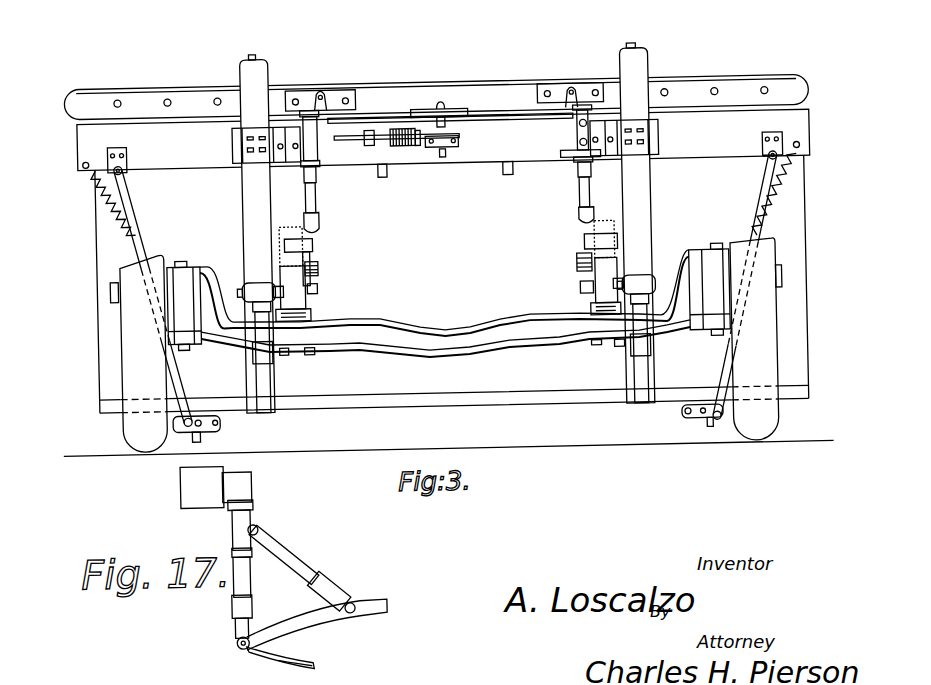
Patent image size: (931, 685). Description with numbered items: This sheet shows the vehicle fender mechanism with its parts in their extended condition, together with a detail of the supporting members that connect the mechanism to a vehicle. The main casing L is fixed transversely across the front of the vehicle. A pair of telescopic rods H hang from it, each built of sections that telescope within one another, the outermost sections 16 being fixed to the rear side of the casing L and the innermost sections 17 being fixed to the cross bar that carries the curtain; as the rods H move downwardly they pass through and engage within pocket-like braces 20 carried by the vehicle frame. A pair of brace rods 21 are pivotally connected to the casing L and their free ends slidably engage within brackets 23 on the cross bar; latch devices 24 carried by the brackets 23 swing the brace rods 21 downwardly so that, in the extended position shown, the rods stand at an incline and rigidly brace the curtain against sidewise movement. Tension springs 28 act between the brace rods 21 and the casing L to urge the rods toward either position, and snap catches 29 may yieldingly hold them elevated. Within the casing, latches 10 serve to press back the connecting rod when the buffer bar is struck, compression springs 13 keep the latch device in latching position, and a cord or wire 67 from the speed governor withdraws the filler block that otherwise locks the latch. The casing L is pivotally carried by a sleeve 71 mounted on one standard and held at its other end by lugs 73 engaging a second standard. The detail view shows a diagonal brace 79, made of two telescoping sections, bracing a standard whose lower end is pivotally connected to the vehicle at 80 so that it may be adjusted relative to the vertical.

In FIG. 3, the telescopic rods H is at (262, 69).
In FIG. 3, the main casing L is at (796, 135).
In FIG. 3, the latches 10 is at (329, 96).
In FIG. 3, the compression springs 13 is at (105, 367).
In FIG. 3, the outermost sections 16 is at (602, 121).
In FIG. 3, the innermost sections 17 is at (258, 385).
In FIG. 3, the pocket-like braces 20 is at (252, 288).
In FIG. 3, the brace rods 21 is at (134, 214).
In FIG. 3, the brackets 23 is at (175, 416).
In FIG. 3, the latch devices 24 is at (197, 424).
In FIG. 3, the tension springs 28 is at (111, 203).
In FIG. 3, the snap catches 29 is at (384, 176).
In FIG. 3, the cord or wire 67 is at (375, 138).
In FIG. 3, the sleeve 71 is at (310, 147).
In FIG. 3, the lugs 73 is at (580, 126).
In FIG. 17, the diagonal brace 79 is at (284, 547).
In FIG. 17, the pivotal connection 80 is at (232, 644).